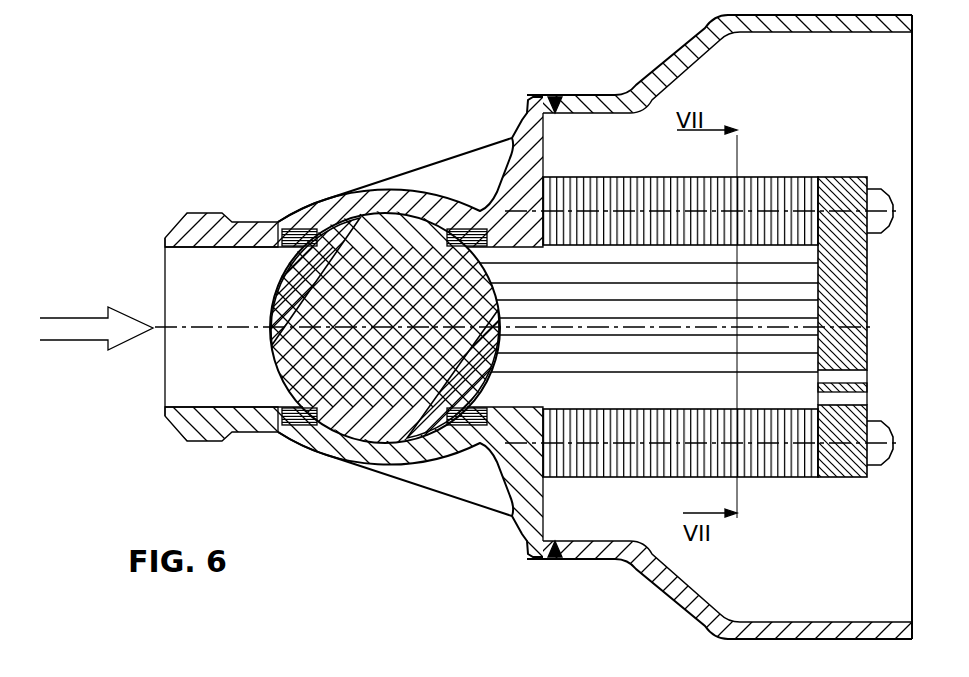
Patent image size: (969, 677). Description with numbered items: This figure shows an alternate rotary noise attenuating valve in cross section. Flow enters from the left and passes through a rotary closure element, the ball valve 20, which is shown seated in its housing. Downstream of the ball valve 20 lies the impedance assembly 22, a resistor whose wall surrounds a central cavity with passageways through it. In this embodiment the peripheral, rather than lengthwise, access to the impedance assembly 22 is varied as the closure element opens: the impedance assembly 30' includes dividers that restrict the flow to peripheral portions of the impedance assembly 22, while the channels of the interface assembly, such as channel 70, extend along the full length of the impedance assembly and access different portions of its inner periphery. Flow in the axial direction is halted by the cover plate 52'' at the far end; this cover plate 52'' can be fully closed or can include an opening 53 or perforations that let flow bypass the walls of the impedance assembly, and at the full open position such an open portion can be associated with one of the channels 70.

The ball valve 20 is at (283, 313).
The impedance assembly 22 is at (786, 172).
The cover plate 52'' is at (862, 306).
The impedance assembly 30' is at (707, 337).
The opening 53 is at (855, 387).
The channel 70 is at (625, 402).